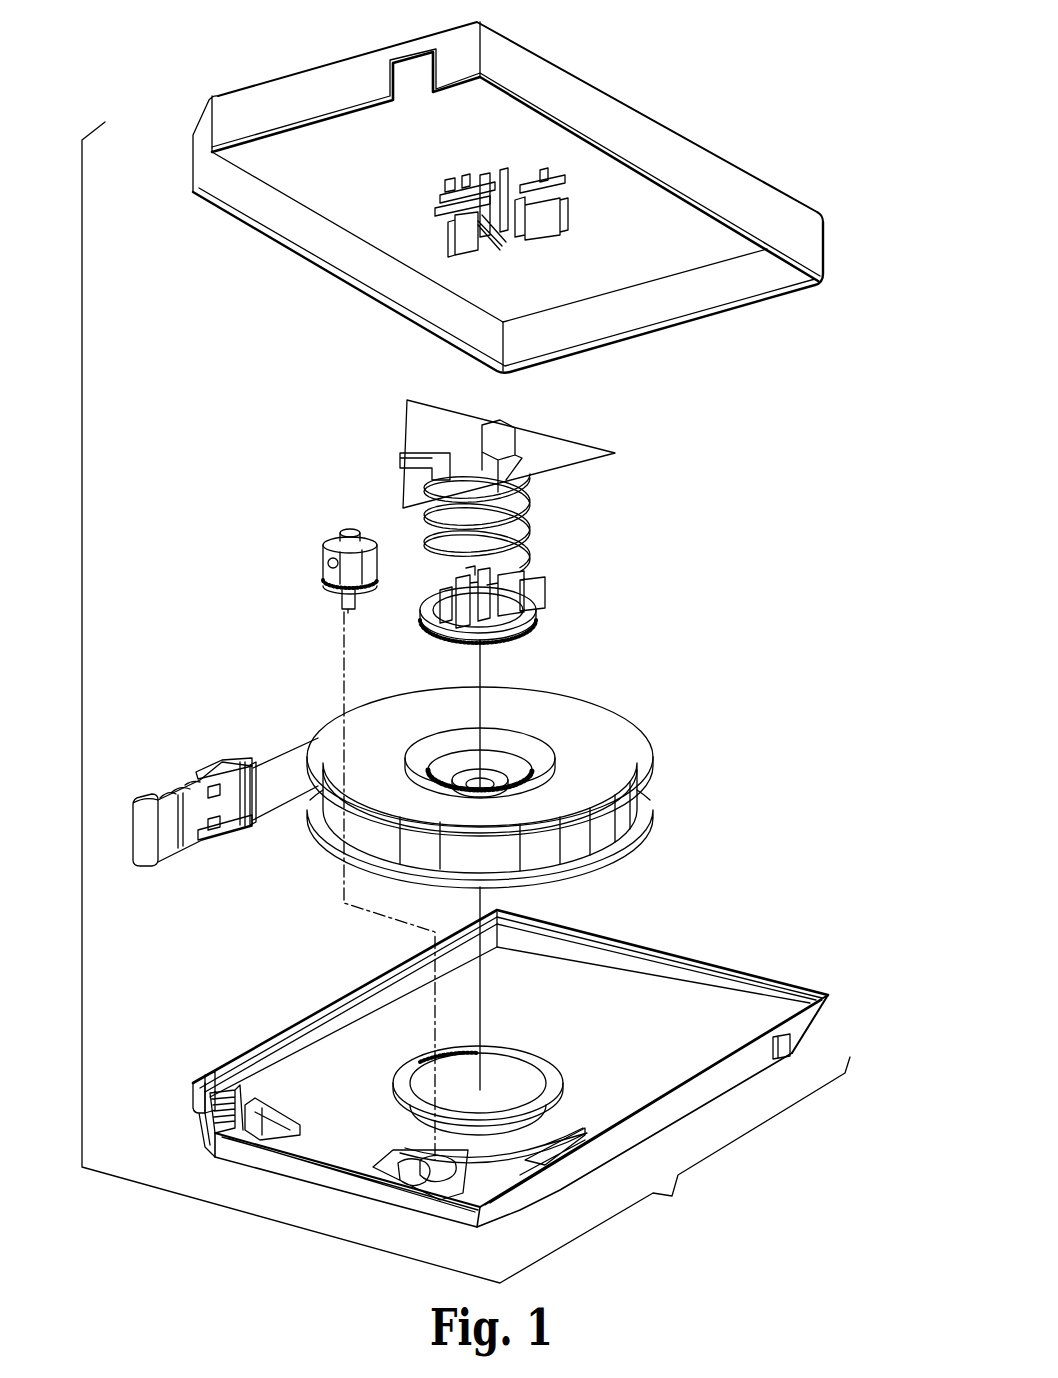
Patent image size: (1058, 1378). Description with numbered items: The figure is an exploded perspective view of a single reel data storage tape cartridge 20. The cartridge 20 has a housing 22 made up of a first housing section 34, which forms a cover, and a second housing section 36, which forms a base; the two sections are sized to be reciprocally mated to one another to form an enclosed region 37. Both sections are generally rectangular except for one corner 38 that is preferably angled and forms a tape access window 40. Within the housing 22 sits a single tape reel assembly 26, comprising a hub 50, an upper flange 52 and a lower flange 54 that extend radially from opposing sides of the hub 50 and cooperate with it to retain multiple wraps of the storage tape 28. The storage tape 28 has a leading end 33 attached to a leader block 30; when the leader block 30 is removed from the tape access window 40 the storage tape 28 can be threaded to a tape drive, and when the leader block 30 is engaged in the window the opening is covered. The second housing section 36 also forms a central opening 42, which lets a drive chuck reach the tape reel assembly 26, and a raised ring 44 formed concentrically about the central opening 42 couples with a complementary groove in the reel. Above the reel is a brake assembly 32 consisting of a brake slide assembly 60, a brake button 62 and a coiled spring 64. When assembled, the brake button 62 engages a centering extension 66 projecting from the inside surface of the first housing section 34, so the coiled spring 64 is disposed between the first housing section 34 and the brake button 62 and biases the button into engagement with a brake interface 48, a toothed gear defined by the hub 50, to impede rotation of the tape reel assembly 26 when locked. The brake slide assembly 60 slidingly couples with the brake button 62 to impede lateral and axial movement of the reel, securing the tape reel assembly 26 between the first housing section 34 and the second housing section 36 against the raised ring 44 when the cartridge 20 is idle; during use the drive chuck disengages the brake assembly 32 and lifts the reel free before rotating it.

The single reel data storage tape cartridge 20 is at (512, 616).
The housing 22 is at (512, 617).
The first housing section 34 is at (500, 190).
The corner 38 is at (205, 113).
The centering extension 66 is at (447, 247).
The second housing section 36 is at (472, 1058).
The enclosed region 37 is at (637, 1007).
The tape access window 40 is at (185, 1113).
The central opening 42 is at (520, 1067).
The raised ring 44 is at (563, 1080).
The brake assembly 32 is at (473, 521).
The brake slide assembly 60 is at (343, 466).
The brake button 62 is at (547, 611).
The coiled spring 64 is at (530, 513).
The single tape reel assembly 26 is at (556, 769).
The brake interface 48 is at (437, 760).
The hub 50 is at (512, 738).
The upper flange 52 is at (632, 752).
The lower flange 54 is at (643, 810).
The storage tape 28 is at (280, 768).
The leader block 30 is at (160, 771).
The leading end 33 is at (265, 785).